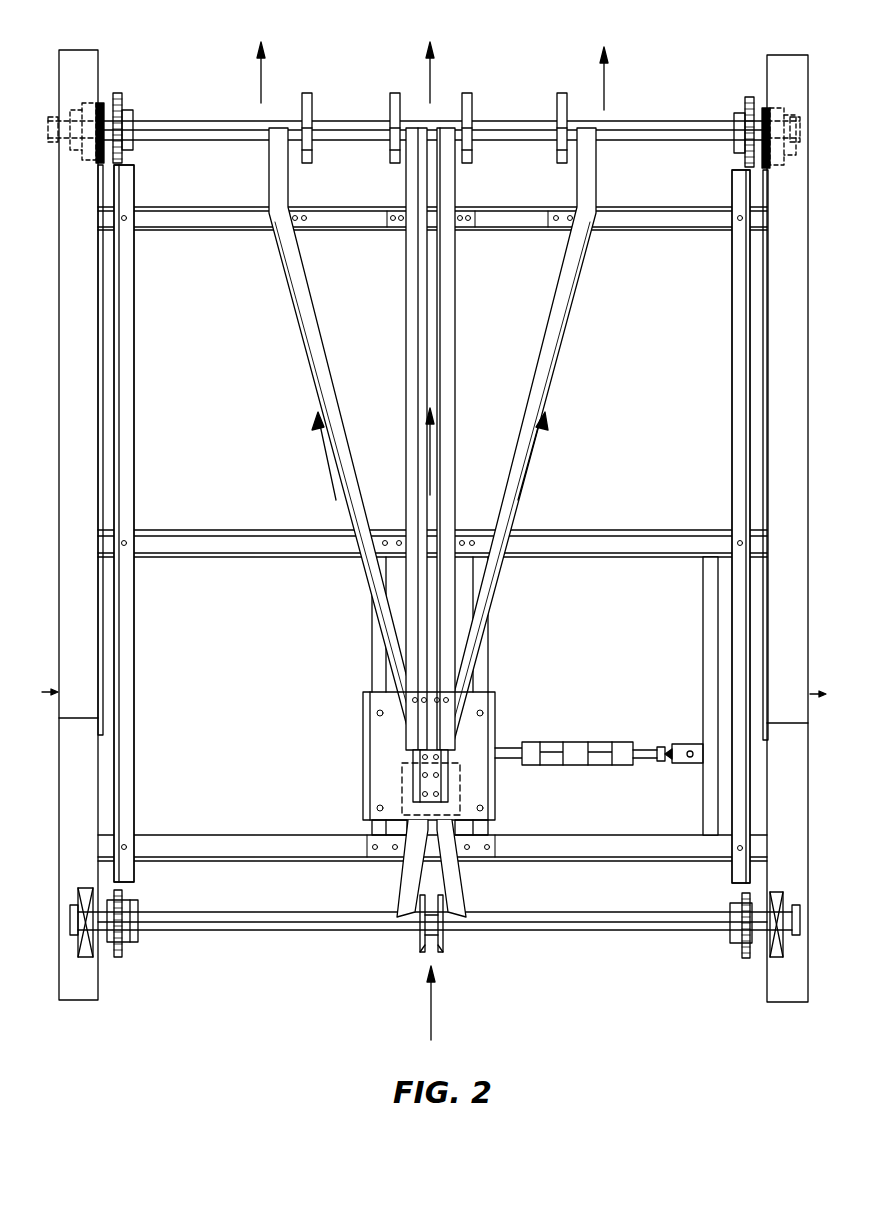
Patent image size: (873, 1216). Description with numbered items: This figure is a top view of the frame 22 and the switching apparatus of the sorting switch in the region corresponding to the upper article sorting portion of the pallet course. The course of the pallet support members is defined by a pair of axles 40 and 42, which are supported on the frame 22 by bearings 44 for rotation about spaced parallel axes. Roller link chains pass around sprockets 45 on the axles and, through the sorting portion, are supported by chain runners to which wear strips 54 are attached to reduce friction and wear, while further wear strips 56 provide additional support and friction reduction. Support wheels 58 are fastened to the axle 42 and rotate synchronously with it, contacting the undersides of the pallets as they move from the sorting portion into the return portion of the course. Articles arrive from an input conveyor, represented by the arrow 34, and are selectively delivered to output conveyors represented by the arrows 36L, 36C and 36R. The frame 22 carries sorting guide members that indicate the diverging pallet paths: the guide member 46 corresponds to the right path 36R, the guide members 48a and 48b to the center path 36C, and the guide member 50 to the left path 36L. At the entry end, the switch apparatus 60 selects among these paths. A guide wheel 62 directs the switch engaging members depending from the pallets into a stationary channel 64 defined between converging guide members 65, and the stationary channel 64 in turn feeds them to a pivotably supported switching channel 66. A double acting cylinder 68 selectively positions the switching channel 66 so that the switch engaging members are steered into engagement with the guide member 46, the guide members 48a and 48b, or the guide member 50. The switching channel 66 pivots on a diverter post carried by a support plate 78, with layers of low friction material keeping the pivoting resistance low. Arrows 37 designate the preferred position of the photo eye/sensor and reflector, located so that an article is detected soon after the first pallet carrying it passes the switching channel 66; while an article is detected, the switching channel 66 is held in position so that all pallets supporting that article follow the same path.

The frame 22 is at (78, 50).
The arrow indicating input conveyor 34 is at (432, 1003).
The left output conveyor arrow 36L is at (263, 78).
The center output conveyor arrow 36C is at (432, 80).
The right output conveyor arrow 36R is at (606, 85).
The arrows designating photo eye/sensor position 37 is at (435, 706).
The axle 40 is at (201, 934).
The axle 42 is at (172, 121).
The bearing 44 is at (102, 103).
The sprocket 45 is at (122, 98).
The sorting guide member 46 is at (560, 347).
The sorting guide member 48a is at (456, 330).
The sorting guide member 48b is at (406, 330).
The sorting guide member 50 is at (303, 350).
The wear strip 54 is at (117, 370).
The wear strip 56 is at (103, 427).
The support wheel 58 is at (390, 100).
The switch apparatus 60 is at (495, 768).
The guide wheel 62 is at (442, 942).
The stationary channel 64 is at (430, 868).
The converging guide member 65 is at (400, 874).
The switching channel 66 is at (440, 790).
The double acting cylinder 68 is at (585, 765).
The support plate 78 is at (398, 782).